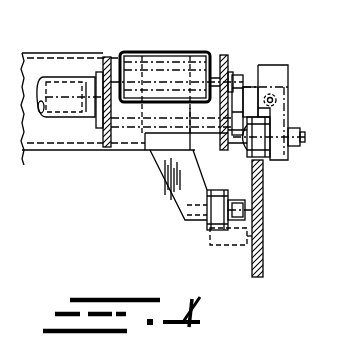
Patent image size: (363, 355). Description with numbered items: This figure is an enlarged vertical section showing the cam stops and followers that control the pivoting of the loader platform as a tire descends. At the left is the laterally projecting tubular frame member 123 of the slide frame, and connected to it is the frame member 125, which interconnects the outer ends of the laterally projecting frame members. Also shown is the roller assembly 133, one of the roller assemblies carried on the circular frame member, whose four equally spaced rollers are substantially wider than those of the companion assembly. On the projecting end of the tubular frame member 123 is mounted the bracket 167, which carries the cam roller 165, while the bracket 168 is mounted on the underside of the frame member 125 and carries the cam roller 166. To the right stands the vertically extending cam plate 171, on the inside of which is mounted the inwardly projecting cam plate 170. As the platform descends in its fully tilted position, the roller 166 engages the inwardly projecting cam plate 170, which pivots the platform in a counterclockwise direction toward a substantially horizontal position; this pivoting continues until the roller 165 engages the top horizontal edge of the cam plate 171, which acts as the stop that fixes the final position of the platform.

The laterally projecting frame member 123 is at (63, 90).
The frame member 125 is at (147, 160).
The roller assembly 133 is at (172, 49).
The cam roller 165 is at (263, 160).
The cam roller 166 is at (210, 231).
The bracket 167 is at (277, 73).
The bracket 168 is at (168, 178).
The inwardly projecting cam plate 170 is at (232, 245).
The vertically extending cam plate 171 is at (264, 224).